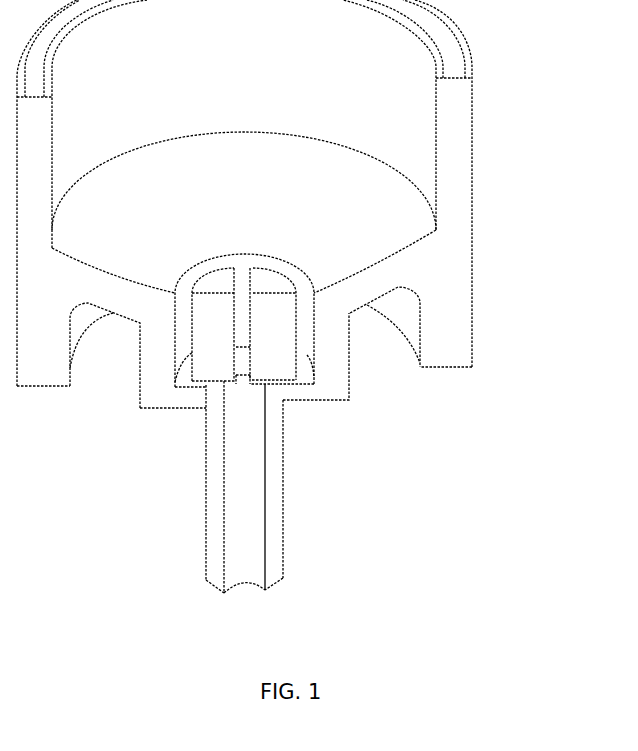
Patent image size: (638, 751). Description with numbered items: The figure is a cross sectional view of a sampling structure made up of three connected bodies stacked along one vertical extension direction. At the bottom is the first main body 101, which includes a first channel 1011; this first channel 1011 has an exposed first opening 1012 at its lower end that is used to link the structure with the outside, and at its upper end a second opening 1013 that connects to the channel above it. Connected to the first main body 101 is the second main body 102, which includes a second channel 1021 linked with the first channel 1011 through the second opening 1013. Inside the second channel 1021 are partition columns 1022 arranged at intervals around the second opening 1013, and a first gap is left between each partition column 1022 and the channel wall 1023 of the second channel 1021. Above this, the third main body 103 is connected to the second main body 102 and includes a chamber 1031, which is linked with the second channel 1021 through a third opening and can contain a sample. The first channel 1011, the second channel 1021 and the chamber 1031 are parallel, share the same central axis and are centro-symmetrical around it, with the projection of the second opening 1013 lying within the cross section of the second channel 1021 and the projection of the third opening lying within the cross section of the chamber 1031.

The first main body 101 is at (285, 493).
The first channel 1011 is at (253, 540).
The first opening 1012 is at (250, 587).
The second opening 1013 is at (242, 382).
The second main body 102 is at (352, 396).
The second channel 1021 is at (307, 352).
The partition column 1022 is at (278, 313).
The channel wall 1023 is at (173, 363).
The third main body 103 is at (474, 146).
The chamber 1031 is at (425, 172).